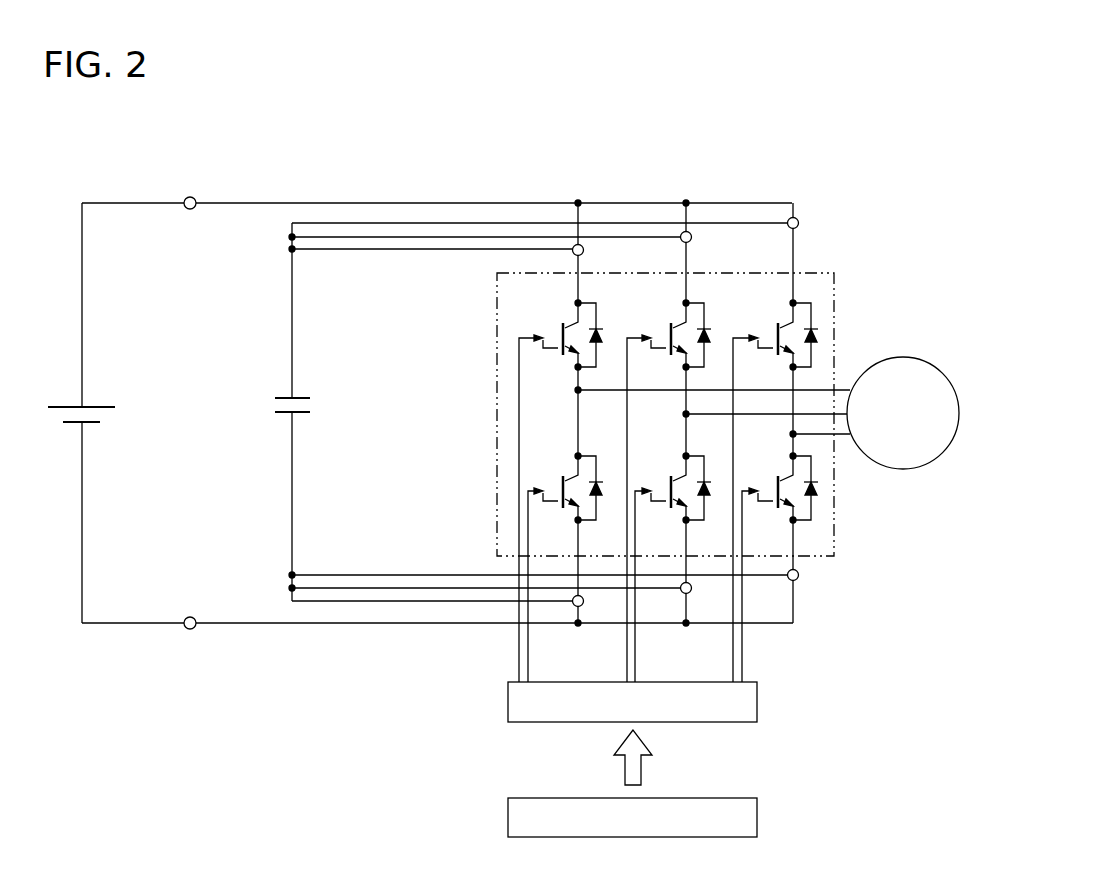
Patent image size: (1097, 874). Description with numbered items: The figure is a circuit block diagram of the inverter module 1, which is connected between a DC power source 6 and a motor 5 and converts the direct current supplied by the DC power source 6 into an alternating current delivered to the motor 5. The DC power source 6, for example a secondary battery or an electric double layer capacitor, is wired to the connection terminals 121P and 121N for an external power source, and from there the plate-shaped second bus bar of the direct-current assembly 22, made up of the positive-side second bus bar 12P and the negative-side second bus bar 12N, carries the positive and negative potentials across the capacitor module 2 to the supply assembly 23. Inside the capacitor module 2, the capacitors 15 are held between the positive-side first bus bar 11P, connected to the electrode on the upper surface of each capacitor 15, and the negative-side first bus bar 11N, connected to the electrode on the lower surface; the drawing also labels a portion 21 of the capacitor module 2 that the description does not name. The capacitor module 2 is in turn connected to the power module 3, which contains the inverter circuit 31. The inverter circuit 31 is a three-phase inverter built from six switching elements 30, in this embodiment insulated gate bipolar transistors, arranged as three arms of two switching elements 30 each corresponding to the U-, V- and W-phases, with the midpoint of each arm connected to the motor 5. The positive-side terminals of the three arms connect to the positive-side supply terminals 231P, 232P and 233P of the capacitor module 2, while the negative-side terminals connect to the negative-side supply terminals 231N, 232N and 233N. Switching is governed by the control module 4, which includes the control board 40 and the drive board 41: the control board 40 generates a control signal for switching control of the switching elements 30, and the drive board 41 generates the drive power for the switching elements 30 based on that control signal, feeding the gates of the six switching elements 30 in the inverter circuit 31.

The inverter module 1 is at (630, 115).
The capacitor module 2 is at (330, 191).
The power module 3 is at (820, 273).
The control module 4 is at (627, 759).
The motor 5 is at (897, 362).
The DC power source 6 is at (57, 388).
The positive-side first bus bar 11P is at (292, 322).
The negative-side first bus bar 11N is at (292, 487).
The positive-side second bus bar 12P is at (408, 202).
The negative-side second bus bar 12N is at (325, 625).
The capacitor 15 is at (276, 396).
The capacitor connection wiring 21 is at (281, 282).
The direct-current assembly 22 is at (494, 192).
The supply assembly 23 is at (667, 194).
The switching element 30 is at (540, 319).
The inverter circuit 31 is at (542, 383).
The control board 40 is at (508, 820).
The drive board 41 is at (508, 702).
The connection terminal for external power source 121P is at (190, 197).
The connection terminal for external power source 121N is at (192, 630).
The positive-side supply terminal 231P is at (578, 244).
The positive-side supply terminal 232P is at (687, 231).
The positive-side supply terminal 233P is at (793, 217).
The negative-side supply terminal 231N is at (578, 607).
The negative-side supply terminal 232N is at (686, 594).
The negative-side supply terminal 233N is at (797, 580).